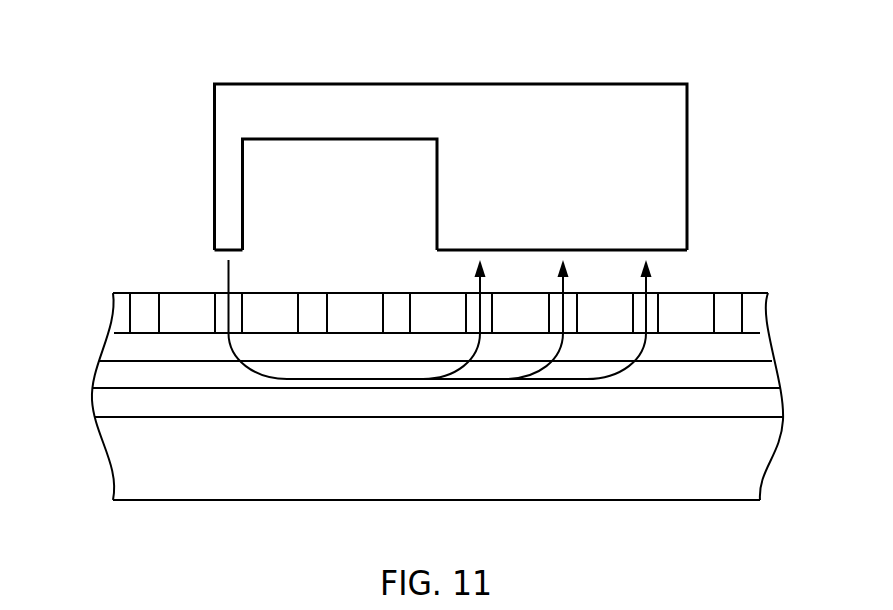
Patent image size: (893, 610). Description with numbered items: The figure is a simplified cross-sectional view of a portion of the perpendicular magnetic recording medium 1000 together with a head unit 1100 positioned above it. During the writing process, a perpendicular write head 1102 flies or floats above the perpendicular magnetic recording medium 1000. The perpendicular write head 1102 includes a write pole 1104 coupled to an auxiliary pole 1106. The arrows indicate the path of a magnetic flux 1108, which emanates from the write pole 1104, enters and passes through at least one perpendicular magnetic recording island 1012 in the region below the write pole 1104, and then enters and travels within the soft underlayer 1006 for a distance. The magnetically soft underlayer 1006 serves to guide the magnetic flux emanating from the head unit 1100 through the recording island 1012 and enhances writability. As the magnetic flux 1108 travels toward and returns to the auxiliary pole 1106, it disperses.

The head unit 1100 is at (587, 58).
The perpendicular write head 1102 is at (226, 186).
The write pole 1104 is at (215, 258).
The auxiliary pole 1106 is at (670, 251).
The magnetic flux 1108 is at (253, 370).
The perpendicular magnetic recording medium 1000 is at (50, 309).
The perpendicular magnetic recording island 1012 is at (648, 333).
The soft underlayer 1006 is at (778, 375).